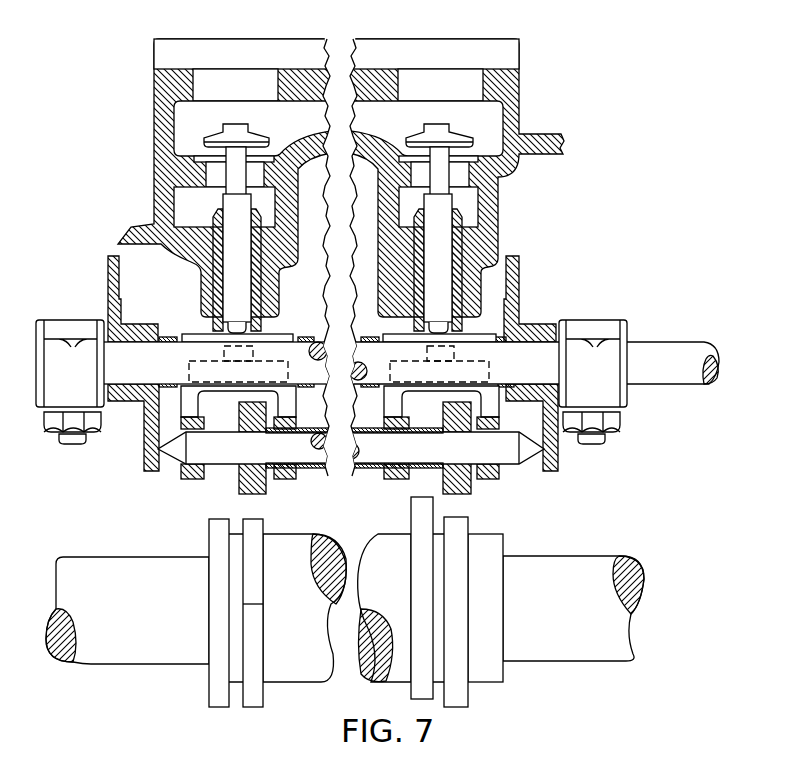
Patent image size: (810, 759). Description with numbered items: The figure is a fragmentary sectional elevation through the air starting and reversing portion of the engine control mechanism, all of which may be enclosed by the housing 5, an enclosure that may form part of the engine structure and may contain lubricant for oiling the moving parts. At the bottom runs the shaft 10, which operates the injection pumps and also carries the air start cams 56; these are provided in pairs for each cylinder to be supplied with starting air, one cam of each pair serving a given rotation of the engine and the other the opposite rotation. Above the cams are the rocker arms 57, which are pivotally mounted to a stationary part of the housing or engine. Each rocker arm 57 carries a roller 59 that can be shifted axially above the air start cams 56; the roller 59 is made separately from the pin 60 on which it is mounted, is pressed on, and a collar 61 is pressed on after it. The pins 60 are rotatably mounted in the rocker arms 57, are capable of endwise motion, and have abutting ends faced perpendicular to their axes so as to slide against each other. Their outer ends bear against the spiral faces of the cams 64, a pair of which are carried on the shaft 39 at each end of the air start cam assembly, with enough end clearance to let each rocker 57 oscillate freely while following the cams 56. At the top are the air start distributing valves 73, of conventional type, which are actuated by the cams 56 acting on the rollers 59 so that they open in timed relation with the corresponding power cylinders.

The housing 5 is at (515, 101).
The shaft 10 is at (98, 564).
The shaft 39 is at (645, 347).
The air start cams 56 is at (210, 522).
The rocker arms 57 is at (192, 403).
The roller 59 is at (240, 485).
The pins 60 is at (177, 457).
The collar 61 is at (313, 465).
The spiral faced cams 64 is at (107, 273).
The air start distributing valves 73 is at (218, 134).